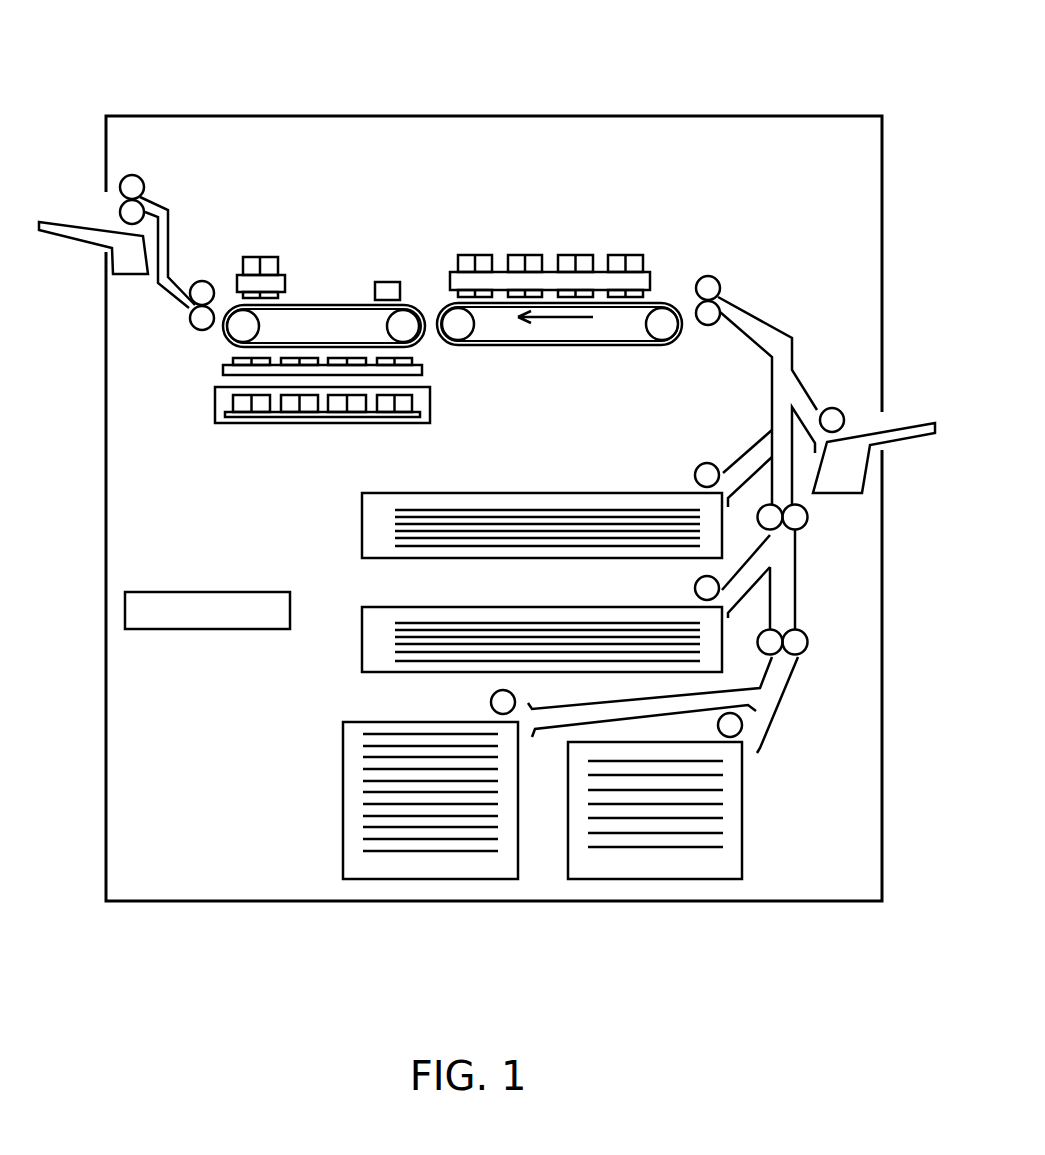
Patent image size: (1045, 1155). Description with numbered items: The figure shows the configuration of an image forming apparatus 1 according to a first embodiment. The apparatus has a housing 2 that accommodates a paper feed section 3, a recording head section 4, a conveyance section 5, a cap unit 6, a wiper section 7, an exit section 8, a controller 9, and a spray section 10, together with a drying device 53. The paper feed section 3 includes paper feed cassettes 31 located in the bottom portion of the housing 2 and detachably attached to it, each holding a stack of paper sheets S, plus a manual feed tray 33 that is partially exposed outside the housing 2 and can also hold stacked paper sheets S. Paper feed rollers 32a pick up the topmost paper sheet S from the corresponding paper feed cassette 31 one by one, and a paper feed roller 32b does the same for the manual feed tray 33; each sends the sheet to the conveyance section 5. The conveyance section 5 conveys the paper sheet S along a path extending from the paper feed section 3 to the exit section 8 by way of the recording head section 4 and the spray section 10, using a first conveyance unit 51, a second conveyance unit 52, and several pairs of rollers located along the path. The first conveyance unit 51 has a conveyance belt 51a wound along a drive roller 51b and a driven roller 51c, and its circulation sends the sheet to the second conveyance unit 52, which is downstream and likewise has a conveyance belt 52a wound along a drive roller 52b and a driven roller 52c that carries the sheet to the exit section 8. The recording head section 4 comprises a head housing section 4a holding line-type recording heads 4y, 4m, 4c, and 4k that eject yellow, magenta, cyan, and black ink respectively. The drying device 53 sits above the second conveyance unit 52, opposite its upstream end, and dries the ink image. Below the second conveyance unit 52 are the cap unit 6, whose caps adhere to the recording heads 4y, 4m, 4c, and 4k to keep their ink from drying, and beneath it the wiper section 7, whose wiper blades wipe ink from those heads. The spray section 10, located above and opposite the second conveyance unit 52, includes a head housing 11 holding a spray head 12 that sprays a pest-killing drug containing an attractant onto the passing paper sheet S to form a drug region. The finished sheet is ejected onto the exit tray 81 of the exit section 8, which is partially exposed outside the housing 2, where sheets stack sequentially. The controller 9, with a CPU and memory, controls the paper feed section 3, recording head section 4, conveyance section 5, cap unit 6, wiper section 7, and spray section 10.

The image forming apparatus 1 is at (519, 458).
The housing 2 is at (882, 830).
The paper feed section 3 is at (552, 723).
The recording head section 4 is at (587, 220).
The head housing section 4a is at (603, 282).
The recording head 4y is at (475, 255).
The recording head 4m is at (522, 255).
The recording head 4c is at (570, 255).
The recording head 4k is at (620, 255).
The conveyance section 5 is at (683, 492).
The cap unit 6 is at (208, 369).
The wiper section 7 is at (238, 432).
The exit section 8 is at (117, 219).
The exit tray 81 is at (68, 240).
The controller 9 is at (125, 603).
The spray section 10 is at (287, 234).
The head housing 11 is at (284, 284).
The spray head 12 is at (272, 265).
The paper feed cassette 31 is at (362, 508).
The paper feed roller 32a is at (703, 466).
The paper feed roller 32b is at (832, 408).
The manual feed tray 33 is at (910, 432).
The first conveyance unit 51 is at (592, 313).
The conveyance belt 51a is at (658, 303).
The drive roller 51b is at (458, 330).
The driven roller 51c is at (668, 330).
The second conveyance unit 52 is at (290, 282).
The conveyance belt 52a is at (349, 303).
The drive roller 52b is at (243, 330).
The driven roller 52c is at (411, 320).
The drying device 53 is at (392, 282).
The paper sheet S is at (413, 548).